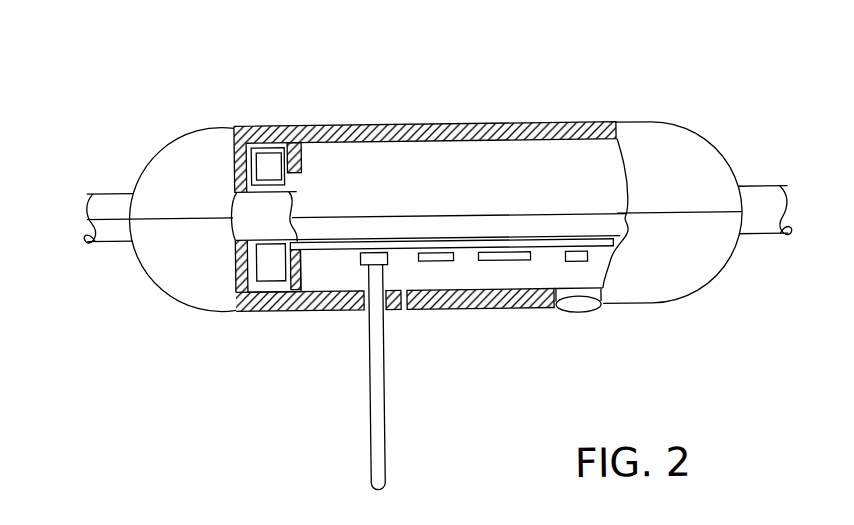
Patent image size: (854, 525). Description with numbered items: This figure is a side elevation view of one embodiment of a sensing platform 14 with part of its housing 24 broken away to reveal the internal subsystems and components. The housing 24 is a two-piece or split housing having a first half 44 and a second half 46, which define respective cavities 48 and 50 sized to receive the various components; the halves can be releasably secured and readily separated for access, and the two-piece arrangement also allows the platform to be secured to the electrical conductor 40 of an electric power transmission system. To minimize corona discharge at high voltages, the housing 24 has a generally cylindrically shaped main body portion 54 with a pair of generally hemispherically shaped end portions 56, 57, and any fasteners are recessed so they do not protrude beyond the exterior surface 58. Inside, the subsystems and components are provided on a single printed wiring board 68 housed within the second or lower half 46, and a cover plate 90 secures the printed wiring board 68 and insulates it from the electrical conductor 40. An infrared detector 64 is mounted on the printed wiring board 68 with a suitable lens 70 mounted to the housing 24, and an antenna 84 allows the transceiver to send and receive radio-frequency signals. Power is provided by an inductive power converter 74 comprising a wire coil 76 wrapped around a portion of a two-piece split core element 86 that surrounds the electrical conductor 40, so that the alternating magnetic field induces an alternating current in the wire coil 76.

The sensing platform 14 is at (164, 90).
The housing 24 is at (500, 122).
The electrical conductor 40 is at (117, 239).
The first half 44 is at (678, 126).
The second half 46 is at (716, 282).
The cavity 48 is at (446, 176).
The cavity 50 is at (346, 282).
The main body portion 54 is at (433, 124).
The end portion 56 is at (728, 163).
The end portion 57 is at (168, 139).
The exterior surface 58 is at (690, 188).
The infrared detector 64 is at (564, 258).
The printed wiring board 68 is at (404, 262).
The lens 70 is at (574, 318).
The inductive power converter 74 is at (228, 156).
The wire coil 76 is at (288, 180).
The antenna 84 is at (366, 399).
The split core element 86 is at (261, 306).
The cover plate 90 is at (496, 237).